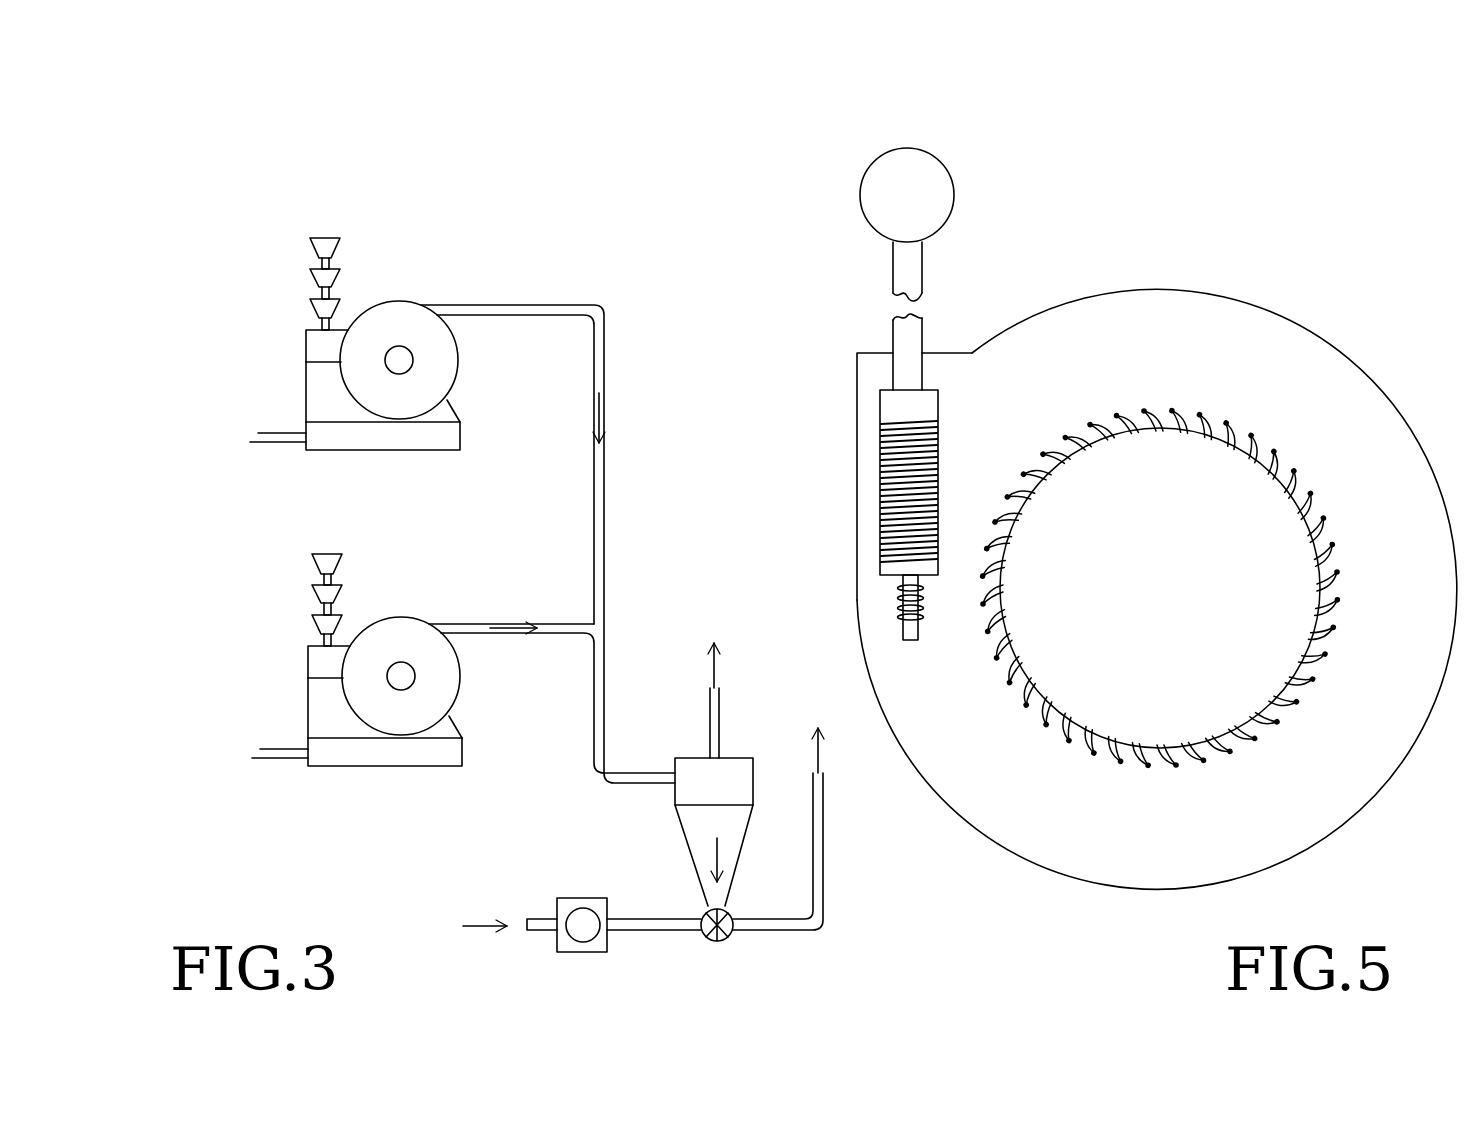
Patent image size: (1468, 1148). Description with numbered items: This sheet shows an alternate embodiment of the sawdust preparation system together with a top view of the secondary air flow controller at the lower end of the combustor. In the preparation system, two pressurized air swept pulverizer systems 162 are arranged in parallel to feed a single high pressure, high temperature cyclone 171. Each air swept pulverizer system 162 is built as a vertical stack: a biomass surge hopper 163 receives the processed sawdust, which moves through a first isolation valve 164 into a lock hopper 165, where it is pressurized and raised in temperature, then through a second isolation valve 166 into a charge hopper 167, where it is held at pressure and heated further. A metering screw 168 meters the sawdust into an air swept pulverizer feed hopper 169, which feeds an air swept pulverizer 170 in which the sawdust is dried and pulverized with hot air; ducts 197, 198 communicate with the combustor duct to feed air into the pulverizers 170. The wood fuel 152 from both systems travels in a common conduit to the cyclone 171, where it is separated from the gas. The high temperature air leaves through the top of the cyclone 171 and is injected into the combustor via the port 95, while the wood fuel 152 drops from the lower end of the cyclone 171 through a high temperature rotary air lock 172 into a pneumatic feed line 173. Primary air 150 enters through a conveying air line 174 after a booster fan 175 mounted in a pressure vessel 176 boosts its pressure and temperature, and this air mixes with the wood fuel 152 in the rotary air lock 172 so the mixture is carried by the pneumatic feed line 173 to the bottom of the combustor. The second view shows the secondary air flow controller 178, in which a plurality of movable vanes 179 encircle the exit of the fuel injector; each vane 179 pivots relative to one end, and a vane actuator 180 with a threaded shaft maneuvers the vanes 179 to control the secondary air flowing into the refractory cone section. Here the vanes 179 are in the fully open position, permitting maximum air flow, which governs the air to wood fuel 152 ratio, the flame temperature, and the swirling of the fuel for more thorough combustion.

In FIG. 3, the port 95 is at (693, 681).
In FIG. 3, the primary air 150 is at (488, 922).
In FIG. 3, the wood fuel 152 is at (604, 420).
In FIG. 3, the air swept pulverizer system 162 is at (230, 227).
In FIG. 3, the biomass surge hopper 163 is at (327, 247).
In FIG. 3, the first isolation valve 164 is at (322, 265).
In FIG. 3, the lock hopper 165 is at (330, 277).
In FIG. 3, the second isolation valve 166 is at (322, 293).
In FIG. 3, the charge hopper 167 is at (330, 305).
In FIG. 3, the metering screw 168 is at (322, 322).
In FIG. 3, the air swept pulverizer feed hopper 169 is at (310, 345).
In FIG. 3, the air swept pulverizer 170 is at (430, 333).
In FIG. 3, the cyclone 171 is at (735, 773).
In FIG. 3, the rotary air lock 172 is at (728, 937).
In FIG. 3, the pneumatic feed line 173 is at (822, 913).
In FIG. 3, the conveying air line 174 is at (633, 932).
In FIG. 3, the booster fan 175 is at (570, 942).
In FIG. 3, the pressure vessel 176 is at (582, 898).
In FIG. 5, the secondary air flow controller 178 is at (828, 300).
In FIG. 5, the vanes 179 is at (1302, 500).
In FIG. 5, the vane actuator 180 is at (913, 408).
In FIG. 3, the duct 197 is at (277, 442).
In FIG. 3, the duct 198 is at (288, 758).